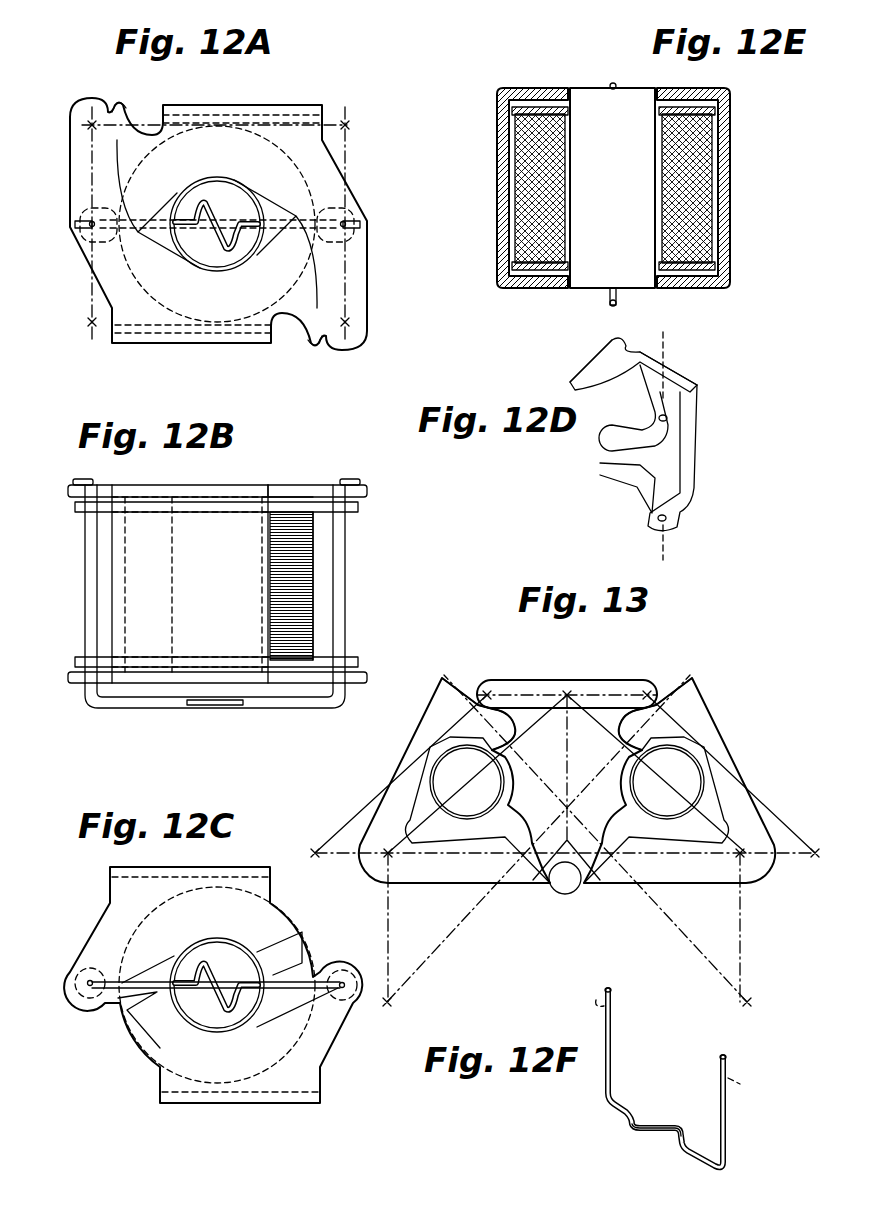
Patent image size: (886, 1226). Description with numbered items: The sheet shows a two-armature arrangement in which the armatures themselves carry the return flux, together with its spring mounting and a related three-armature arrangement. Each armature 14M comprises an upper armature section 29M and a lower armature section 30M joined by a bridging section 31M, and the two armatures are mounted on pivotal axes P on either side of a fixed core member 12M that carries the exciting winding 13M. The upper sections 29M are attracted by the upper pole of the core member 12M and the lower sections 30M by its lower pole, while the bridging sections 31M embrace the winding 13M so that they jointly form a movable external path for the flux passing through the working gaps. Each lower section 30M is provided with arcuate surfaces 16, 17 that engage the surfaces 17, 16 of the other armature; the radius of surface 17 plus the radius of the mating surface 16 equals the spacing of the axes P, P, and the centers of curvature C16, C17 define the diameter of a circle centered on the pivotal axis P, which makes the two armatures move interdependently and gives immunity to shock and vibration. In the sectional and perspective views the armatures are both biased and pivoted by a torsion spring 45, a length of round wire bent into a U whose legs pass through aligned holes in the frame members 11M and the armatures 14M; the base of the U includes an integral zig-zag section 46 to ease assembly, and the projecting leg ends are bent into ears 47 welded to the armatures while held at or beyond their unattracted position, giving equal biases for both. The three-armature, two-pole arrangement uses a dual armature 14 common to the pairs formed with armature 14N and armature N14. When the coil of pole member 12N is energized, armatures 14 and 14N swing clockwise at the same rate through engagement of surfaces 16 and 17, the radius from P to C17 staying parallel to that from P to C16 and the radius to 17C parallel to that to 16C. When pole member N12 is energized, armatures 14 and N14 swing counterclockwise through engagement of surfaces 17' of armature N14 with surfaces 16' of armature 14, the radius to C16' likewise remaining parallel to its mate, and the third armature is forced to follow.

In FIG. 12A, the armature 14M is at (322, 168).
In FIG. 12E, the armature 14M is at (497, 129).
In FIG. 12B, the armature 14M is at (266, 472).
In FIG. 12C, the armature 14M is at (78, 890).
In FIG. 12D, the armature 14M is at (768, 420).
In FIG. 12A, the core member 12M is at (203, 253).
In FIG. 12E, the core member 12M is at (633, 166).
In FIG. 12C, the core member 12M is at (237, 958).
In FIG. 12A, the lower armature section 30M is at (240, 133).
In FIG. 12D, the lower armature section 30M is at (648, 363).
In FIG. 12A, the arcuate surface 16 is at (219, 228).
In FIG. 12B, the arcuate surface 16 is at (290, 470).
In FIG. 12D, the arcuate surface 16 is at (606, 415).
In FIG. 13, the arcuate surface 16 is at (519, 793).
In FIG. 12A, the arcuate surface 17 is at (221, 230).
In FIG. 12D, the arcuate surface 17 is at (578, 361).
In FIG. 13, the arcuate surface 17 is at (496, 783).
In FIG. 12A, the center of curvature C16 is at (221, 223).
In FIG. 13, the center of curvature C16 is at (419, 739).
In FIG. 12A, the center of curvature C17 is at (345, 125).
In FIG. 13, the center of curvature C17 is at (315, 853).
In FIG. 12A, the pivotal axis P is at (347, 223).
In FIG. 12C, the pivotal axis P is at (87, 980).
In FIG. 12D, the pivotal axis P is at (668, 347).
In FIG. 13, the pivotal axis P is at (567, 693).
In FIG. 12E, the exciting winding 13M is at (690, 183).
In FIG. 12B, the exciting winding 13M is at (315, 560).
In FIG. 12E, the frame member 11M is at (700, 105).
In FIG. 12B, the frame member 11M is at (360, 507).
In FIG. 12E, the bridging section 31M is at (498, 220).
In FIG. 12B, the bridging section 31M is at (212, 584).
In FIG. 12D, the bridging section 31M is at (683, 453).
In FIG. 12E, the ear 47 is at (620, 84).
In FIG. 12B, the ear 47 is at (73, 481).
In FIG. 12F, the ear 47 is at (607, 992).
In FIG. 12E, the torsion spring 45 is at (607, 307).
In FIG. 12B, the torsion spring 45 is at (88, 580).
In FIG. 12F, the torsion spring 45 is at (610, 1053).
In FIG. 12B, the integral section 46 is at (195, 708).
In FIG. 12F, the integral section 46 is at (650, 1127).
In FIG. 12C, the upper armature section 29M is at (130, 1007).
In FIG. 12D, the upper armature section 29M is at (650, 480).
In FIG. 13, the armature 14 is at (533, 685).
In FIG. 13, the armature 14N is at (440, 702).
In FIG. 13, the armature N14 is at (692, 710).
In FIG. 13, the pole member 12N is at (452, 765).
In FIG. 13, the pole member N12 is at (690, 773).
In FIG. 13, the center of curvature 16C is at (570, 840).
In FIG. 13, the center of curvature 17C is at (388, 1002).
In FIG. 13, the center of curvature C16' is at (715, 746).
In FIG. 13, the arcuate surface 16' is at (634, 738).
In FIG. 13, the arcuate surface 17' is at (652, 780).